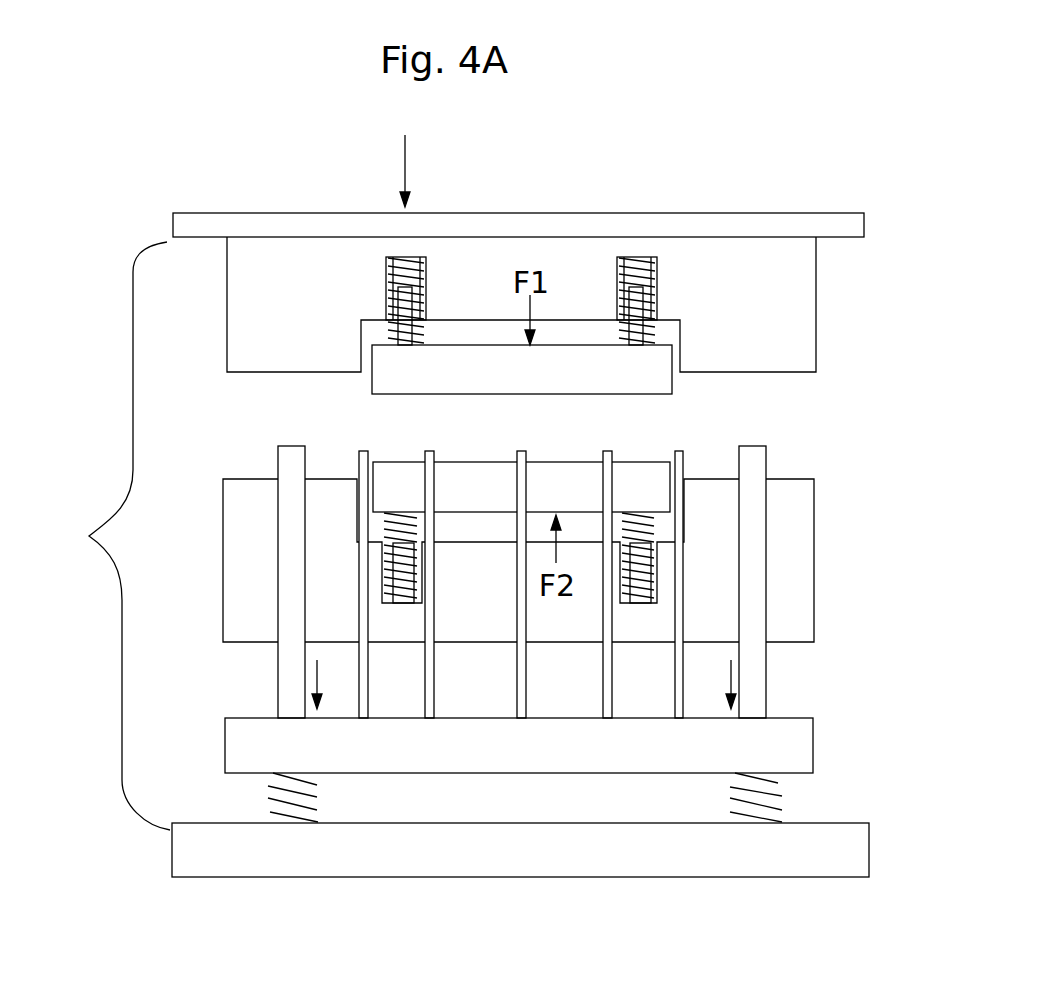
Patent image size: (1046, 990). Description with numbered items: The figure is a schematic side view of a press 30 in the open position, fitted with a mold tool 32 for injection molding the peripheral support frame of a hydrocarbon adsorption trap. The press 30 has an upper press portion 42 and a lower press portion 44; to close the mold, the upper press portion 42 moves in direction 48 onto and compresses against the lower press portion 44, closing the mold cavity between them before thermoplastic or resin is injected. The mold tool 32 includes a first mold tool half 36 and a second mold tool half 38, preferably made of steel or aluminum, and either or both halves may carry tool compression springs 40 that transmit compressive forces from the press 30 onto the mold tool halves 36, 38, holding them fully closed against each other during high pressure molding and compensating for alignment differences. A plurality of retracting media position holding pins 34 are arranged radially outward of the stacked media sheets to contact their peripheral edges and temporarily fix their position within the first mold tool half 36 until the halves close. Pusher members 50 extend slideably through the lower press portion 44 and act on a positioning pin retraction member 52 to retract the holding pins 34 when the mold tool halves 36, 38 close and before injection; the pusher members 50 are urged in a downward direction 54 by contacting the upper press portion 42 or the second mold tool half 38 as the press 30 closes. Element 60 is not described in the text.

The press 30 is at (754, 170).
The mold tool 32 is at (107, 536).
The media position holding pins 34 is at (363, 449).
The first mold tool half 36 is at (560, 480).
The second mold tool half 38 is at (652, 373).
The tool compression springs 40 is at (397, 297).
The upper press portion 42 is at (780, 289).
The lower press portion 44 is at (797, 542).
The direction 48 is at (405, 160).
The pusher members 50 is at (288, 673).
The positioning pin retraction member 52 is at (519, 745).
The downward direction 54 is at (317, 660).
The elastic supports 60 is at (310, 806).